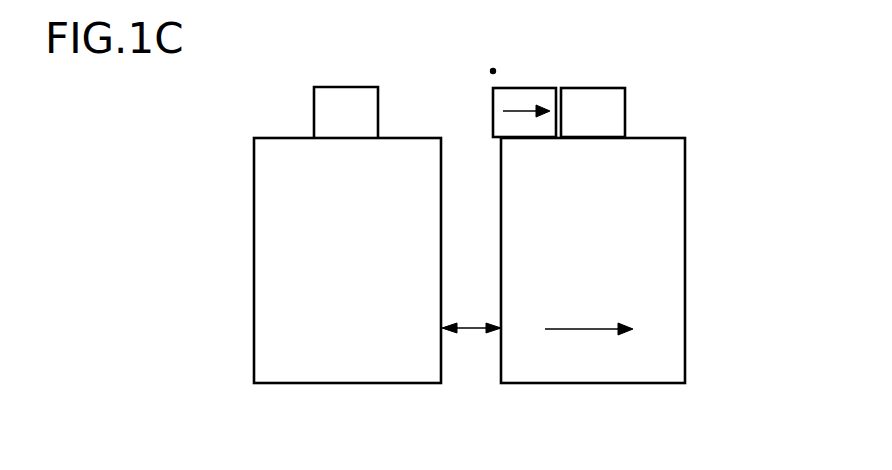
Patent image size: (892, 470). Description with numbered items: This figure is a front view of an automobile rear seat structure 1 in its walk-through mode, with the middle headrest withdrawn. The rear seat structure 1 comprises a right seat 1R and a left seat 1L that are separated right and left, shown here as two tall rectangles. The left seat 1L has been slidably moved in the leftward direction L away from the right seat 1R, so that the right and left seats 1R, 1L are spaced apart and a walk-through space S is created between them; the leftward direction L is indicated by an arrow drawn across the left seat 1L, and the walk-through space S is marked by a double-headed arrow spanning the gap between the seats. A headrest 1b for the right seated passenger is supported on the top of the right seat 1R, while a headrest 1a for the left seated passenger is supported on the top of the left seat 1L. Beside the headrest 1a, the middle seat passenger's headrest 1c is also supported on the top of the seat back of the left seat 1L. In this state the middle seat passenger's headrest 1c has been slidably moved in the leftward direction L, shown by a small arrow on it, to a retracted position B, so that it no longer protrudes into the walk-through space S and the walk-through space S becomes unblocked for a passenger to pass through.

The rear seat structure 1 is at (701, 120).
The right seat 1R is at (272, 293).
The left seat 1L is at (673, 303).
The headrest 1a is at (599, 93).
The headrest 1b is at (355, 95).
The middle seat passenger's headrest 1c is at (550, 93).
The retracted position B is at (495, 48).
The walk-through space S is at (472, 330).
The leftward direction L is at (513, 113).